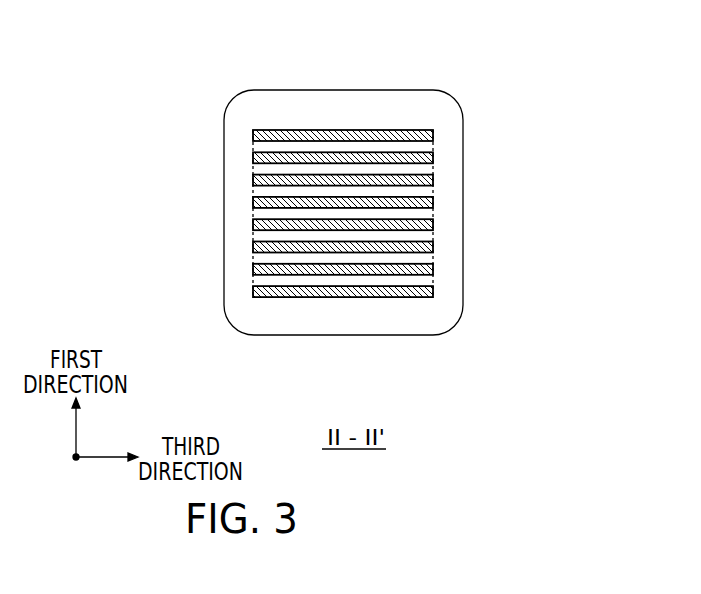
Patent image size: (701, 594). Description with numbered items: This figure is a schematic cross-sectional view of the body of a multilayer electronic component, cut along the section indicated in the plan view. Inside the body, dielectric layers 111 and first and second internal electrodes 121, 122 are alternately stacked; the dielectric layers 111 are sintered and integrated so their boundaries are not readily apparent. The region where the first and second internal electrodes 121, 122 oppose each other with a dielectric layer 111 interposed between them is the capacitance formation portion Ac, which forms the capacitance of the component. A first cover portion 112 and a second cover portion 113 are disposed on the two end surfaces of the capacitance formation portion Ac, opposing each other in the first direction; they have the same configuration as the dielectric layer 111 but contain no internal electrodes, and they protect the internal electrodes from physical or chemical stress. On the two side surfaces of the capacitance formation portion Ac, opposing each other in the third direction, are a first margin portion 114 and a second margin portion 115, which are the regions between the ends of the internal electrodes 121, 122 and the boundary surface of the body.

The dielectric layer 111 is at (432, 146).
The first cover portion 112 is at (339, 98).
The second cover portion 113 is at (340, 327).
The first margin portion 114 is at (231, 240).
The second margin portion 115 is at (459, 241).
The first internal electrode 121 is at (432, 131).
The second internal electrode 122 is at (432, 156).
The capacitance formation portion Ac is at (258, 213).